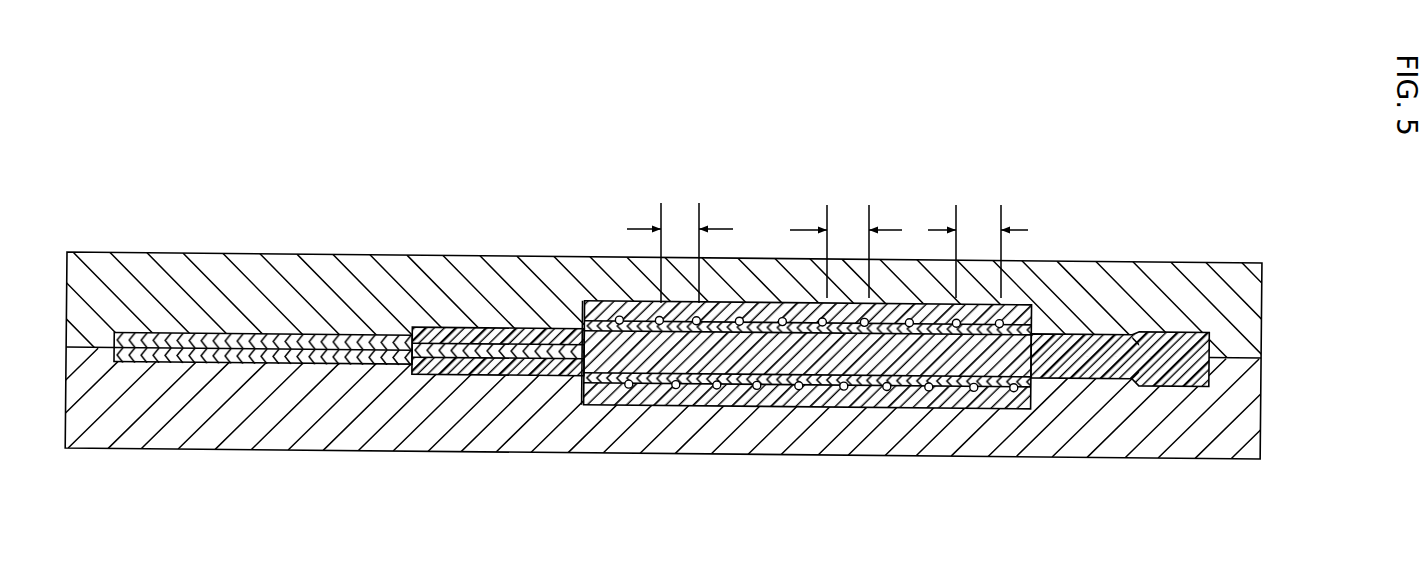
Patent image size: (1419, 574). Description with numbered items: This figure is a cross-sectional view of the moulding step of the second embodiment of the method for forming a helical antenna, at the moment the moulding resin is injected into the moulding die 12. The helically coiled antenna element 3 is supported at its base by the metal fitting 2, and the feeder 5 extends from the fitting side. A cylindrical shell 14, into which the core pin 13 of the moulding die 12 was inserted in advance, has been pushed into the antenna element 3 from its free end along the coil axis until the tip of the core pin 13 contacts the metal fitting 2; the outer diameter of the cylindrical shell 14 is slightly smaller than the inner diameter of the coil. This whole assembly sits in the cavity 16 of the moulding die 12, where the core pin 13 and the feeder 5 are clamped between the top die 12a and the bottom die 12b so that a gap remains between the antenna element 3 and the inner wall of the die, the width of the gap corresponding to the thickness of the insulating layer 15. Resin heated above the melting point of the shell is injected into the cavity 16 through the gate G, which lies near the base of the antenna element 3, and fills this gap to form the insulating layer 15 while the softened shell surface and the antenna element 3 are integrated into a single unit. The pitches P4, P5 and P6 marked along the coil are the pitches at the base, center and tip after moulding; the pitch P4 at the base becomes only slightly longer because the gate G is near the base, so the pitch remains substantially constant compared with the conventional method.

The metal fitting 2 is at (593, 408).
The antenna element 3 is at (740, 322).
The feeder 5 is at (245, 347).
The moulding die 12 is at (686, 355).
The top die 12a is at (1240, 317).
The bottom die 12b is at (1240, 413).
The core pin 13 is at (1072, 357).
The cylindrical shell 14 is at (686, 395).
The insulating layer 15 is at (1010, 312).
The cavity 16 is at (951, 419).
The gate G is at (583, 406).
The pitch at the base P4 is at (680, 253).
The pitch at the center P5 is at (846, 251).
The pitch at the tip P6 is at (978, 251).